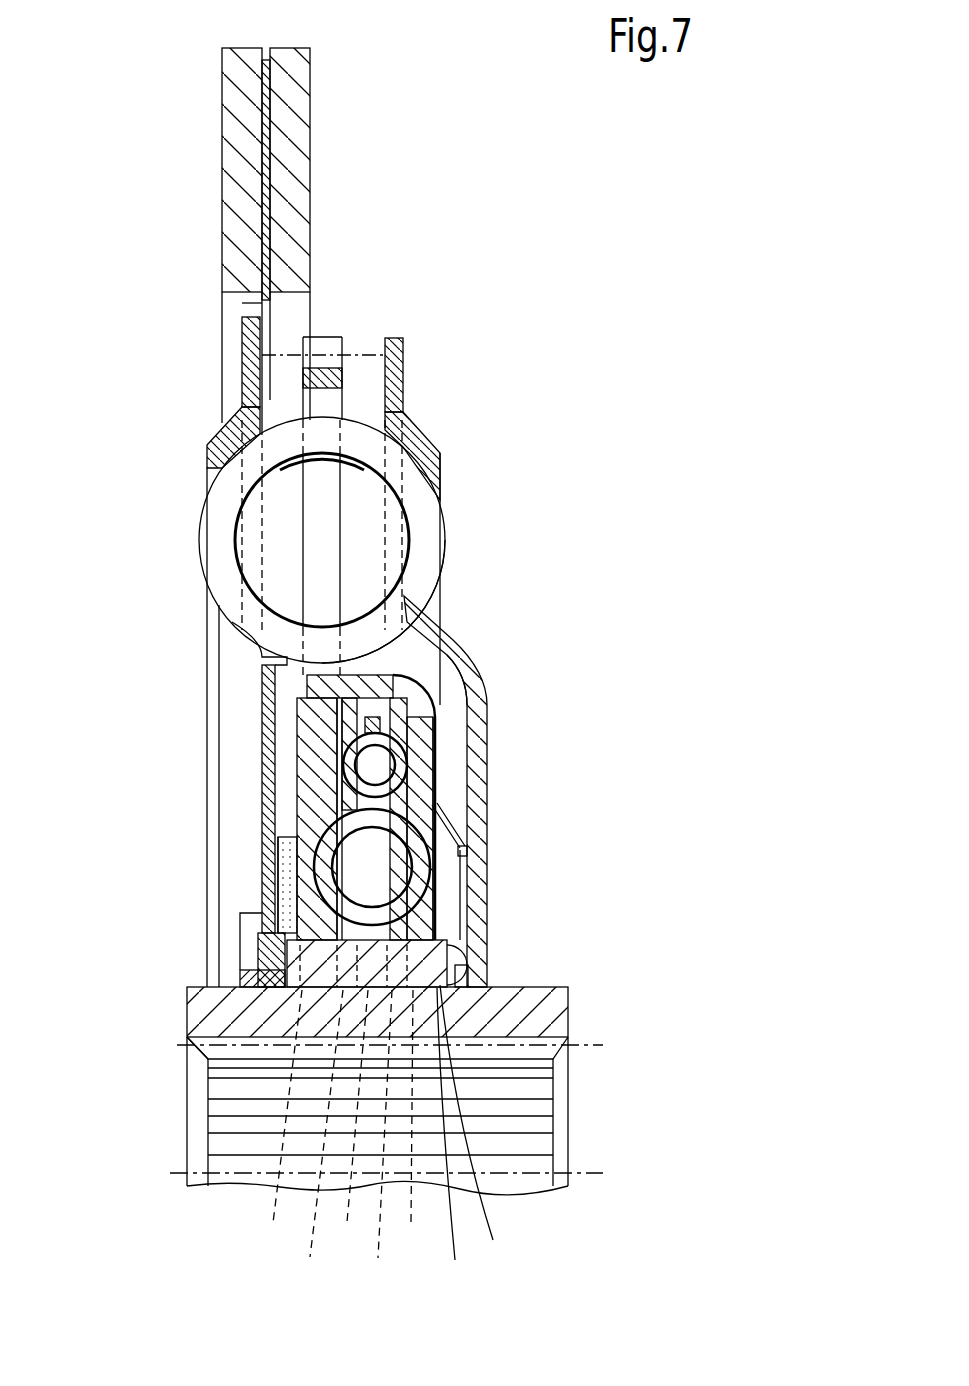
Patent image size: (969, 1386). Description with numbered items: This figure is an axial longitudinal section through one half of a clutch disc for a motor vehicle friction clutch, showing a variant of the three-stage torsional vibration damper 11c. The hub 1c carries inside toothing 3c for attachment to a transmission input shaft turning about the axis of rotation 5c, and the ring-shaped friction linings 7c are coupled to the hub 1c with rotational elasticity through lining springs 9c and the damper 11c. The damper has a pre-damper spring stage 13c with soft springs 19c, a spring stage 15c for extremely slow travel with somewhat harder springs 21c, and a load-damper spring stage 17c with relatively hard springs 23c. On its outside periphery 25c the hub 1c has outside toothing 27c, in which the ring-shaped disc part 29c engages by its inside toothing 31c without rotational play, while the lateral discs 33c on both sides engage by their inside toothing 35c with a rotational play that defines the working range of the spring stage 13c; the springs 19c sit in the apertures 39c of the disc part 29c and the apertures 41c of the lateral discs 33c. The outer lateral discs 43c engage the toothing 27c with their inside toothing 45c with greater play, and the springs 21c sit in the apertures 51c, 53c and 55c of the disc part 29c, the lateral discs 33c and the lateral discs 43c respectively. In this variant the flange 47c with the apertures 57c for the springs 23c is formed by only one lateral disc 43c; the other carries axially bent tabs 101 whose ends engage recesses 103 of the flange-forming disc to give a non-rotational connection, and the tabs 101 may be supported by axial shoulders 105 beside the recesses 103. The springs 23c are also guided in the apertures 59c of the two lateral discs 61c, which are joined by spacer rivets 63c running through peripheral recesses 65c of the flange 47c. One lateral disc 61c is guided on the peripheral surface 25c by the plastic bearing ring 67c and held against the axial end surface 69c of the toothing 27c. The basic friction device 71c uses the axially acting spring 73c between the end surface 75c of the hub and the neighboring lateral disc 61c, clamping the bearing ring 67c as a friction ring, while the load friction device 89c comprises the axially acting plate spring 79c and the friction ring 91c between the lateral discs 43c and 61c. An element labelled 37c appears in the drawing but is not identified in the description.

The hub 1c is at (560, 1010).
The inside toothing 3c is at (550, 1046).
The axis of rotation 5c is at (170, 1168).
The friction linings 7c is at (292, 147).
The lining springs 9c is at (262, 303).
The torsional vibration damper 11c is at (483, 305).
The spring stage (pre-damper stage) 13c is at (413, 760).
The spring stage (damper for extremely slow travel) 15c is at (450, 907).
The third spring stage (load damper) 17c is at (478, 512).
The springs 19c is at (400, 772).
The springs 21c is at (325, 825).
The springs 23c is at (437, 552).
The outside periphery 25c is at (190, 990).
The outside toothing 27c is at (459, 1141).
The disc part 29c is at (470, 935).
The inside toothing 31c is at (349, 1125).
The lateral discs 33c is at (315, 785).
The inside toothing 35c is at (345, 1142).
The top plate 37c is at (405, 672).
The apertures 39c is at (325, 752).
The apertures 41c is at (347, 735).
The lateral discs 43c is at (270, 684).
The inside toothing 45c is at (347, 1125).
The flange 47c is at (342, 353).
The apertures 51c is at (285, 868).
The apertures 53c is at (285, 845).
The apertures 55c is at (305, 840).
The apertures 57c is at (313, 492).
The apertures 59c is at (250, 525).
The lateral discs 61c is at (250, 370).
The spacer rivets 63c is at (370, 353).
The peripheral recesses 65c is at (320, 342).
The bearing ring 67c is at (242, 972).
The axial end surface 69c is at (192, 1026).
The basic friction device 71c is at (486, 961).
The axially acting spring 73c is at (478, 978).
The end surface 75c is at (486, 1132).
The axially acting spring (plate spring) 79c is at (463, 840).
The load friction device 89c is at (274, 893).
The friction ring 91c is at (262, 928).
The axially bent tabs 101 is at (447, 657).
The recesses 103 is at (355, 668).
The axial shoulders 105 is at (410, 630).